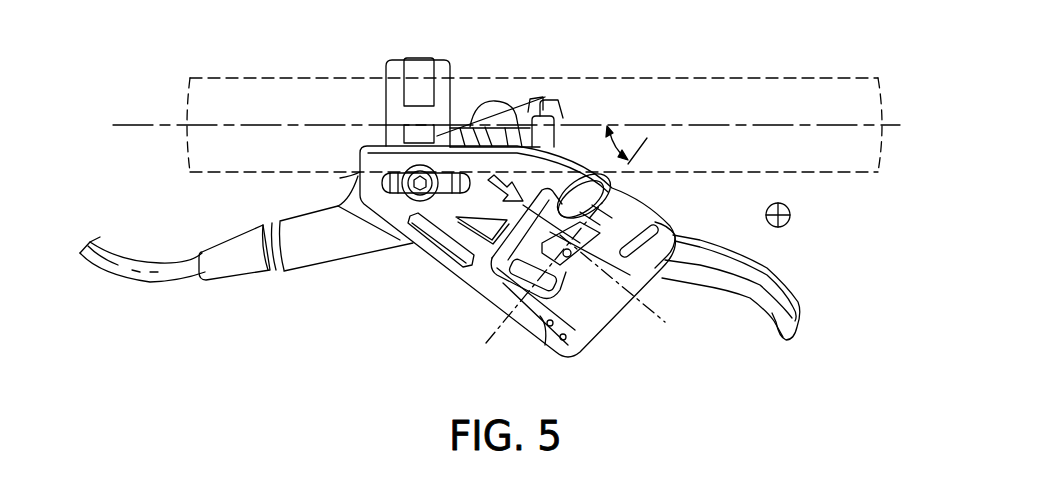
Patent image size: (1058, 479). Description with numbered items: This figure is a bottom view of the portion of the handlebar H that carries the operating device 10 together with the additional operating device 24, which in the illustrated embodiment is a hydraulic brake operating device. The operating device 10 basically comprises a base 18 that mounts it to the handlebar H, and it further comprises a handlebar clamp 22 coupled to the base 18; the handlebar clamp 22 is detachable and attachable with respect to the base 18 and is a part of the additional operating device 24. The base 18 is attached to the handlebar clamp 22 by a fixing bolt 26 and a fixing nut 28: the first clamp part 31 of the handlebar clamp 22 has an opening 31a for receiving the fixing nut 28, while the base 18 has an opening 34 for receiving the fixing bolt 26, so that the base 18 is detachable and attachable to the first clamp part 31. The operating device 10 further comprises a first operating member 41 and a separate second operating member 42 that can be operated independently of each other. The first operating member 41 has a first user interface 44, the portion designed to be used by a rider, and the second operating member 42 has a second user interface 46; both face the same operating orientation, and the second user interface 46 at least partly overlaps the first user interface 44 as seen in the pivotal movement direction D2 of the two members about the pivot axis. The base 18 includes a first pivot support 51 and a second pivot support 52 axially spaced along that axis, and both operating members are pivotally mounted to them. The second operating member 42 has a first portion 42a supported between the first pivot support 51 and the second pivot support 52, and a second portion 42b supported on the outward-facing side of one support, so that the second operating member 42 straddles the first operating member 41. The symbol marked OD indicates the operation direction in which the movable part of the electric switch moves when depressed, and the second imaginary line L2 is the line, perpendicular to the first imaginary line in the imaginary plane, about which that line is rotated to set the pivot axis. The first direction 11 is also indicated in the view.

The handlebar H is at (818, 77).
The operating device 10 is at (600, 345).
The first direction 11 is at (365, 117).
The base 18 is at (498, 134).
The handlebar clamp 22 is at (386, 93).
The additional operating device 24 is at (343, 268).
The fixing bolt 26 is at (400, 186).
The fixing nut 28 is at (415, 125).
The first clamp part 31 is at (398, 62).
The opening 31a is at (436, 135).
The opening 34 is at (416, 233).
The first operating member 41 is at (442, 262).
The second operating member 42 is at (611, 300).
The first portion 42a is at (512, 302).
The second portion 42b is at (615, 186).
The first user interface 44 is at (583, 190).
The second user interface 46 is at (661, 250).
The first pivot support 51 is at (545, 346).
The second pivot support 52 is at (625, 226).
The pivotal movement direction D2 is at (520, 148).
The operation direction OD is at (789, 222).
The second imaginary line L2 is at (657, 335).